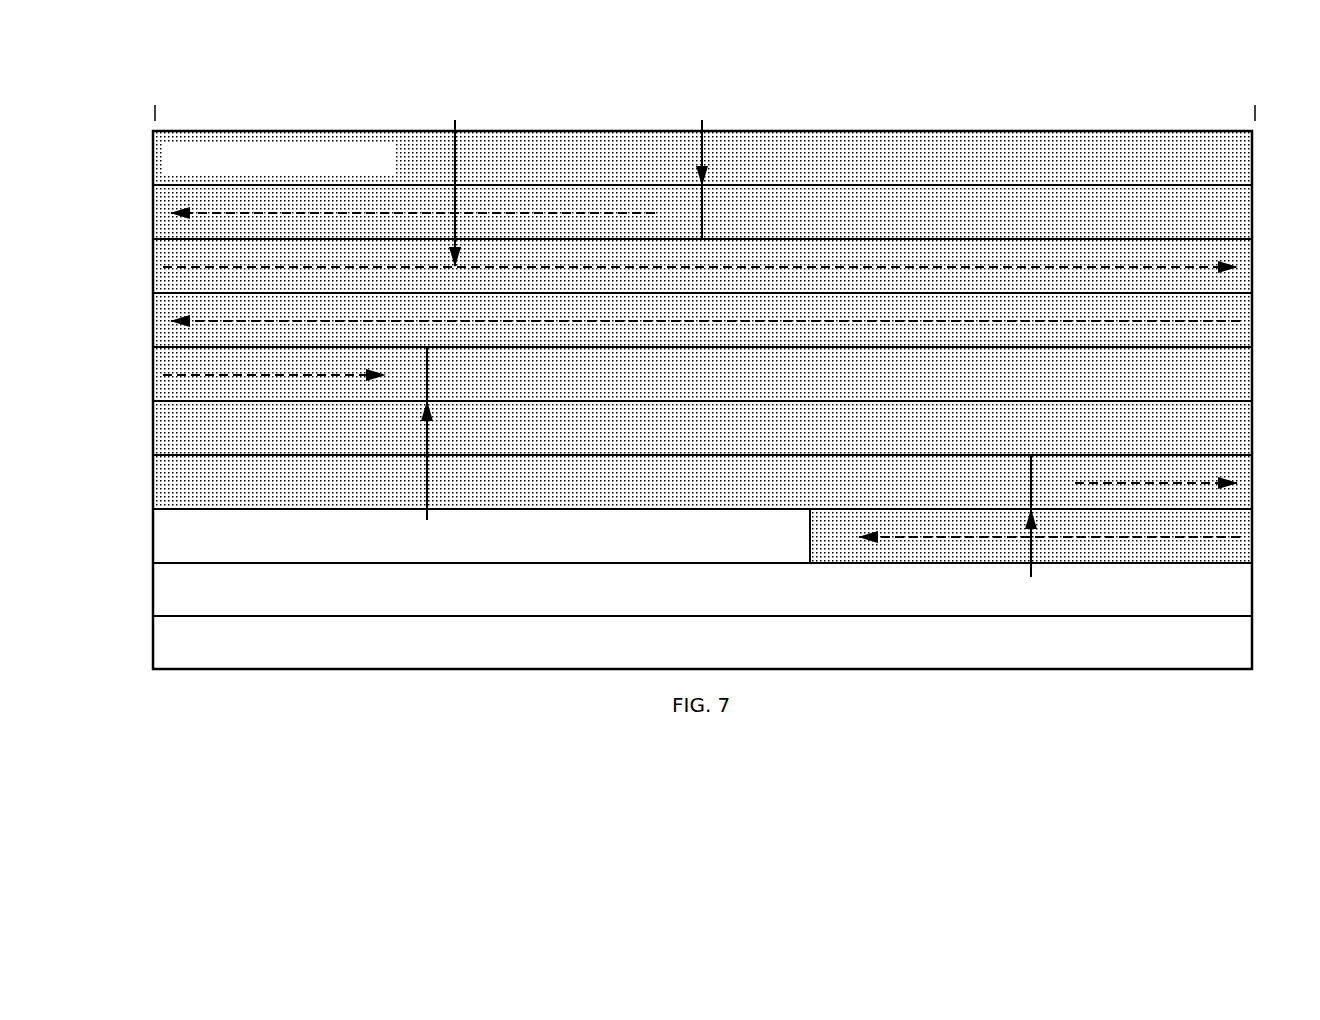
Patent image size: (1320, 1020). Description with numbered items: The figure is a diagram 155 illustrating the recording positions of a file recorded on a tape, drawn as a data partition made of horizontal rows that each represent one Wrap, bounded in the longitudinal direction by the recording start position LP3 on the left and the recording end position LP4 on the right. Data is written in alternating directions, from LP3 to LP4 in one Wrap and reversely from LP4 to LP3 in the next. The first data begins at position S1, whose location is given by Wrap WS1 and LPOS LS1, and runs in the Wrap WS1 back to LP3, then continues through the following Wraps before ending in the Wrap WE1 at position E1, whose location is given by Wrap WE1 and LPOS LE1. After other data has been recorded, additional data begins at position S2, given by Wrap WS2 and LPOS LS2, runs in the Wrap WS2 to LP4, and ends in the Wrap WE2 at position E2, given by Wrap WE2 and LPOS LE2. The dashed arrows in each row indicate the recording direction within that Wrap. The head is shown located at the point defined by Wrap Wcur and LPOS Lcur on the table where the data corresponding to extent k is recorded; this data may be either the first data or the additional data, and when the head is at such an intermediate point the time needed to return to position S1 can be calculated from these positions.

The diagram 155 is at (261, 76).
The position S1 is at (682, 212).
The position E1 is at (407, 374).
The position S2 is at (1051, 482).
The position E2 is at (831, 536).
The recording start position LP3 is at (152, 98).
The recording end position LP4 is at (1251, 98).
The LPOS Lcur is at (455, 172).
The LPOS LS1 is at (700, 131).
The LPOS LE1 is at (428, 477).
The LPOS LS2 is at (1032, 558).
The LPOS LE2 is at (810, 557).
The Wrap WS1 is at (372, 213).
The Wrap Wcur is at (663, 286).
The Wrap WE1 is at (237, 375).
The Wrap WS2 is at (1196, 483).
The Wrap WE2 is at (1088, 537).